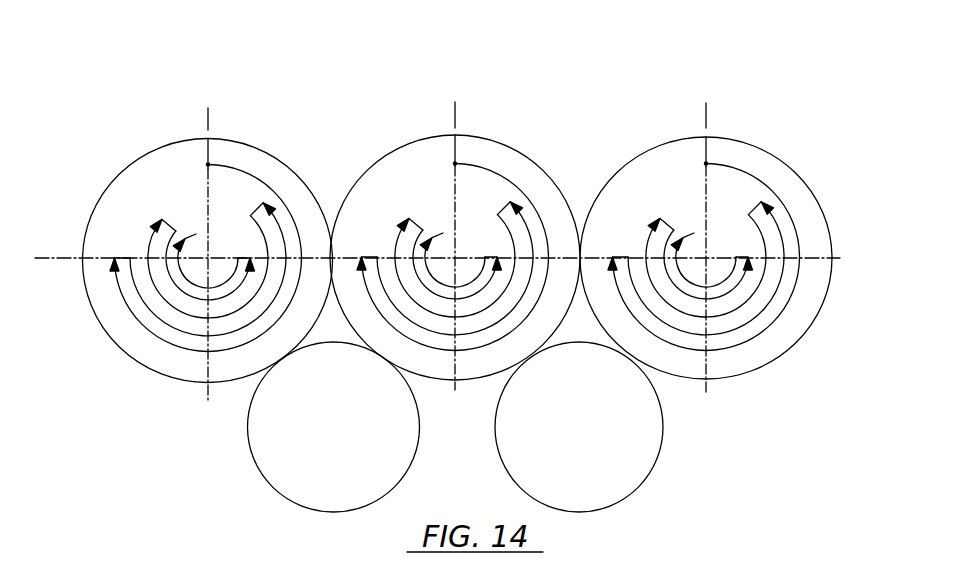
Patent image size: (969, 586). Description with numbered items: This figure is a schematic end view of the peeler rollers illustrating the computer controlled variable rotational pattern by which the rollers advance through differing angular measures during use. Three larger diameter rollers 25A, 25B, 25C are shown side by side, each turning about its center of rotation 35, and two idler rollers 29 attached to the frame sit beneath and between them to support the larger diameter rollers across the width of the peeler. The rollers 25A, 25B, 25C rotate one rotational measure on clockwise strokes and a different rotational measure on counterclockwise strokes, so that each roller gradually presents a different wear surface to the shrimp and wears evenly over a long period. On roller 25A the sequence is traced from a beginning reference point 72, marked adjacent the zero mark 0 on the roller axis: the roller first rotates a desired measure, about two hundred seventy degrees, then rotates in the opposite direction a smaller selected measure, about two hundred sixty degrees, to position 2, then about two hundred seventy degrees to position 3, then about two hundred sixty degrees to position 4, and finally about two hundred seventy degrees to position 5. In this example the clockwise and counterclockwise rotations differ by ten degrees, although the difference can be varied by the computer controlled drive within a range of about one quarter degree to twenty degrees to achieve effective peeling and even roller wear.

The larger diameter roller 25A is at (242, 141).
The larger diameter roller 25B is at (505, 148).
The larger diameter roller 25C is at (734, 139).
The idler roller 29 is at (412, 474).
The center of rotation 35 is at (456, 257).
The beginning reference point 72 is at (206, 167).
The zero reference position 0 is at (207, 105).
The position 2 is at (264, 198).
The position 3 is at (162, 216).
The position 4 is at (260, 250).
The position 5 is at (198, 232).